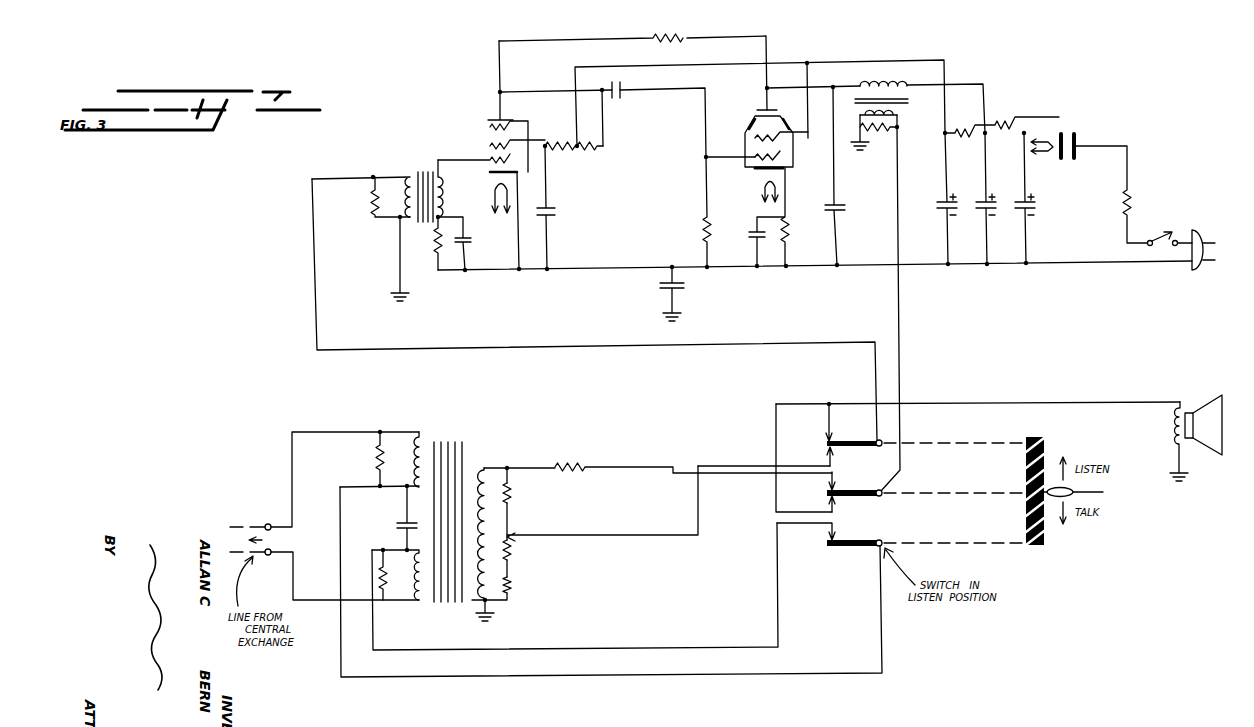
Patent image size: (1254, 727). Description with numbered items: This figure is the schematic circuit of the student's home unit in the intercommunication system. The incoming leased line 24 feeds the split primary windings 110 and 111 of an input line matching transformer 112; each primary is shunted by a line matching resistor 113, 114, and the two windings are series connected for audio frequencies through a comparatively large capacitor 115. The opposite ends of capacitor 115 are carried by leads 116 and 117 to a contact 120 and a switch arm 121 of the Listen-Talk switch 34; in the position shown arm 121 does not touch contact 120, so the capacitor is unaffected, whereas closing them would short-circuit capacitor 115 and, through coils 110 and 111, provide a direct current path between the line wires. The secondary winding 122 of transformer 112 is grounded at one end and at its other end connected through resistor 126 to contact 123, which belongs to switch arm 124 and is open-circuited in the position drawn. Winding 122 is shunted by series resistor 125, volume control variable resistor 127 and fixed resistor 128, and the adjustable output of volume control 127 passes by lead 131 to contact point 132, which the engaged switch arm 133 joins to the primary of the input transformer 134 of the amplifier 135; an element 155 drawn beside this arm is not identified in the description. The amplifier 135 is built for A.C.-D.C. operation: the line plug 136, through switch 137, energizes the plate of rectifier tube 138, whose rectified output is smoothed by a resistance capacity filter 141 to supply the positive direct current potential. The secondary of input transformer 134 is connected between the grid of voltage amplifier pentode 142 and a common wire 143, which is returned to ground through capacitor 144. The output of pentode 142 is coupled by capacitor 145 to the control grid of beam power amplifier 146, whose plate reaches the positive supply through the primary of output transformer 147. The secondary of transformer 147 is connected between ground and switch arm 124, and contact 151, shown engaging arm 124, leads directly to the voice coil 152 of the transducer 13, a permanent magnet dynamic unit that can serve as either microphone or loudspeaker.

The amplifier 135 is at (820, 53).
The voltage amplifier pentode 142 is at (496, 140).
The input transformer 134 is at (426, 172).
The capacitor 145 is at (620, 96).
The common wire 143 is at (600, 271).
The capacitor 144 is at (686, 288).
The beam power amplifier 146 is at (781, 145).
The output transformer 147 is at (907, 105).
The resistance capacity filter 141 is at (968, 182).
The rectifier tube 138 is at (1064, 135).
The switch 137 is at (1168, 223).
The line plug 136 is at (1203, 240).
The leased line 24 is at (268, 523).
The primary winding 110 is at (418, 435).
The line matching resistor 113 is at (376, 459).
The capacitor 115 is at (400, 527).
The primary winding 111 is at (421, 602).
The line matching resistor 114 is at (383, 600).
The input line matching transformer 112 is at (448, 442).
The secondary winding 122 is at (478, 468).
The resistor 125 is at (510, 496).
The volume control variable resistor 127 is at (510, 552).
The fixed resistor 128 is at (510, 590).
The resistor 126 is at (693, 456).
The lead 131 is at (640, 535).
The lead 116 is at (677, 648).
The lead 117 is at (702, 676).
The switch spring 155 is at (828, 428).
The switch arm 133 is at (845, 440).
The contact point 132 is at (835, 452).
The contact 123 is at (836, 478).
The contact 151 is at (830, 506).
The switch arm 124 is at (850, 496).
The contact 120 is at (838, 528).
The switch arm 121 is at (855, 548).
The voice coil 152 is at (1180, 405).
The transducer 13 is at (1212, 442).
The Listen-Talk switch 34 is at (1085, 492).